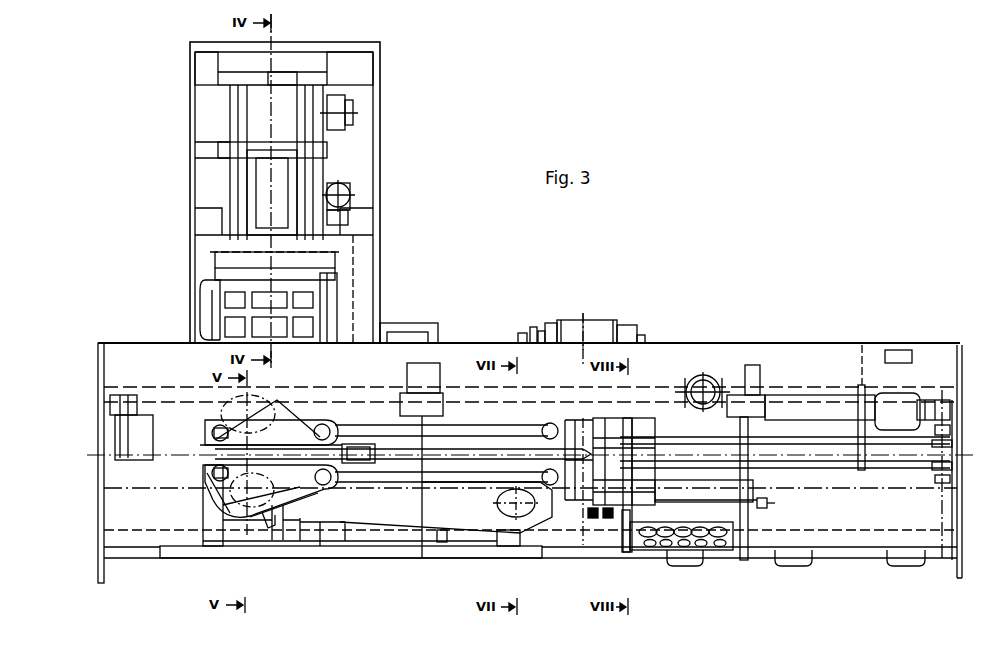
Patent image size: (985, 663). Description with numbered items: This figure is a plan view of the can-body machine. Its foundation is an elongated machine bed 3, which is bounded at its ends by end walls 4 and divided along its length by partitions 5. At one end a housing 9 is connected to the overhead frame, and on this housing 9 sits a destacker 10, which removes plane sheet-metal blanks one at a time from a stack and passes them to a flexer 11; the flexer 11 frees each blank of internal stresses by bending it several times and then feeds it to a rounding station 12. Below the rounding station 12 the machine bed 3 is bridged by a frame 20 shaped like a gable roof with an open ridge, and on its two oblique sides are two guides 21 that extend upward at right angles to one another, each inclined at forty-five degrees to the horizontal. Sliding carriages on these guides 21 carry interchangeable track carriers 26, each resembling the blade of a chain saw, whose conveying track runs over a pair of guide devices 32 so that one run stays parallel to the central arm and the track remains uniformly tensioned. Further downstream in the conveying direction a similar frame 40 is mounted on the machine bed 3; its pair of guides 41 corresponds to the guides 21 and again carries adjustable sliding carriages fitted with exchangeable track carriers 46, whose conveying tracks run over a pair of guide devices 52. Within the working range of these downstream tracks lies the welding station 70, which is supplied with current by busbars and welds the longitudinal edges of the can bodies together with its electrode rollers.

The machine bed 3 is at (149, 357).
The end wall 4 is at (98, 512).
The partition 5 is at (622, 545).
The housing 9 is at (358, 259).
The destacker 10 is at (240, 185).
The flexer 11 is at (322, 320).
The rounding station 12 is at (207, 461).
The frame 20 is at (261, 540).
The guide 21 is at (215, 545).
The track carrier 26 is at (215, 509).
The guide device 32 is at (212, 470).
The frame 40 is at (383, 533).
The guide 41 is at (440, 540).
The track carrier 46 is at (392, 512).
The guide device 52 is at (325, 430).
The welding station 70 is at (603, 442).